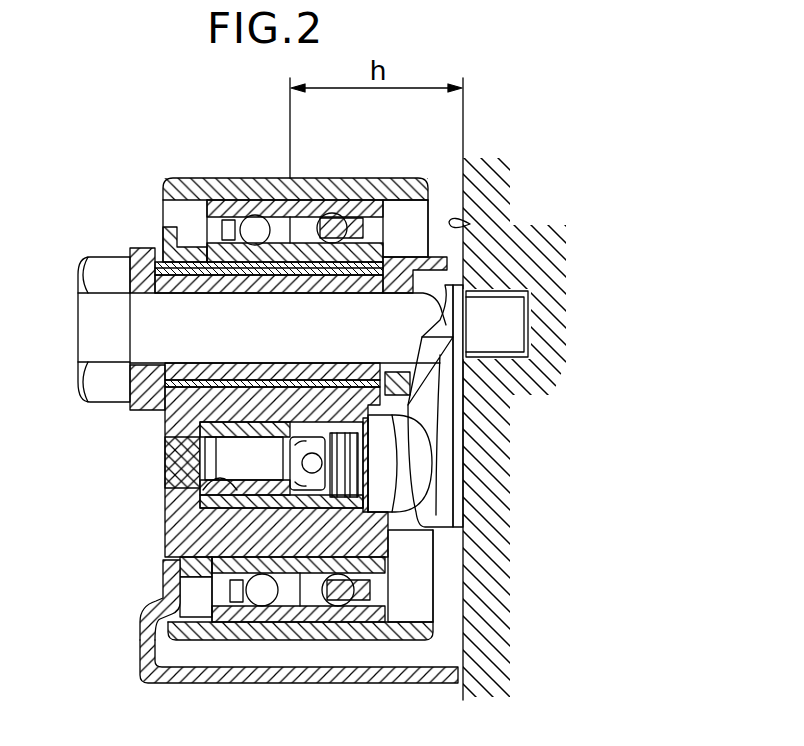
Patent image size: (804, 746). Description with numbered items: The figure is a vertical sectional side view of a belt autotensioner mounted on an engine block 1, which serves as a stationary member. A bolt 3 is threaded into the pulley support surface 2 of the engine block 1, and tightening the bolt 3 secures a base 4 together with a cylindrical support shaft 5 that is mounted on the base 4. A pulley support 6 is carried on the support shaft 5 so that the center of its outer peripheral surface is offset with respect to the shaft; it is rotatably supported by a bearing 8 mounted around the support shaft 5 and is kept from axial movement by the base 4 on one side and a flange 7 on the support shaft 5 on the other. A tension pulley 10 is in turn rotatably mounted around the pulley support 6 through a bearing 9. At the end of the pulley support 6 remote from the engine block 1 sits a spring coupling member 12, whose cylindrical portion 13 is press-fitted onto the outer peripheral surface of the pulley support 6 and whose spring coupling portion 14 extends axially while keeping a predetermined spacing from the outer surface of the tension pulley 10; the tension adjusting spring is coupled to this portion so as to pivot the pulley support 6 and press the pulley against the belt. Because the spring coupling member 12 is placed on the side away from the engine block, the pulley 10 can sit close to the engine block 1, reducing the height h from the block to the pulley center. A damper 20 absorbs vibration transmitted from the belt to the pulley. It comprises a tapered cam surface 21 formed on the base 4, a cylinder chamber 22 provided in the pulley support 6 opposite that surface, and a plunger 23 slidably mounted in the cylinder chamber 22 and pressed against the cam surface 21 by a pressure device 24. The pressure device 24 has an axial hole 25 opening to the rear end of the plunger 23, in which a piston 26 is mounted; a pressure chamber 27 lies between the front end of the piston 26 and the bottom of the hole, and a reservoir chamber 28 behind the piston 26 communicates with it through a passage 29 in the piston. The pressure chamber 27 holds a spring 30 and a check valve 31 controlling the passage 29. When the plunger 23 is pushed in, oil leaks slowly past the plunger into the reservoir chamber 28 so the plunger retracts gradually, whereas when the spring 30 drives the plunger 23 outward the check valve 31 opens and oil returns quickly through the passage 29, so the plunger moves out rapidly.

The engine block 1 is at (490, 166).
The pulley support surface 2 is at (470, 224).
The bolt 3 is at (90, 262).
The base 4 is at (447, 320).
The cylindrical support shaft 5 is at (168, 372).
The pulley support 6 is at (165, 413).
The flange 7 is at (130, 383).
The bearing 8 is at (292, 242).
The bearing 9 is at (197, 211).
The tension pulley 10 is at (190, 180).
The spring coupling member 12 is at (163, 592).
The cylindrical portion 13 is at (176, 561).
The spring coupling portion 14 is at (190, 684).
The damper 20 is at (357, 395).
The tapered cam surface 21 is at (437, 415).
The cylinder chamber 22 is at (282, 628).
The plunger 23 is at (373, 598).
The pressure device 24 is at (249, 422).
The axial hole 25 is at (203, 487).
The piston 26 is at (308, 606).
The pressure chamber 27 is at (345, 477).
The reservoir chamber 28 is at (217, 462).
The passage 29 is at (299, 445).
The spring 30 is at (345, 440).
The check valve 31 is at (336, 438).